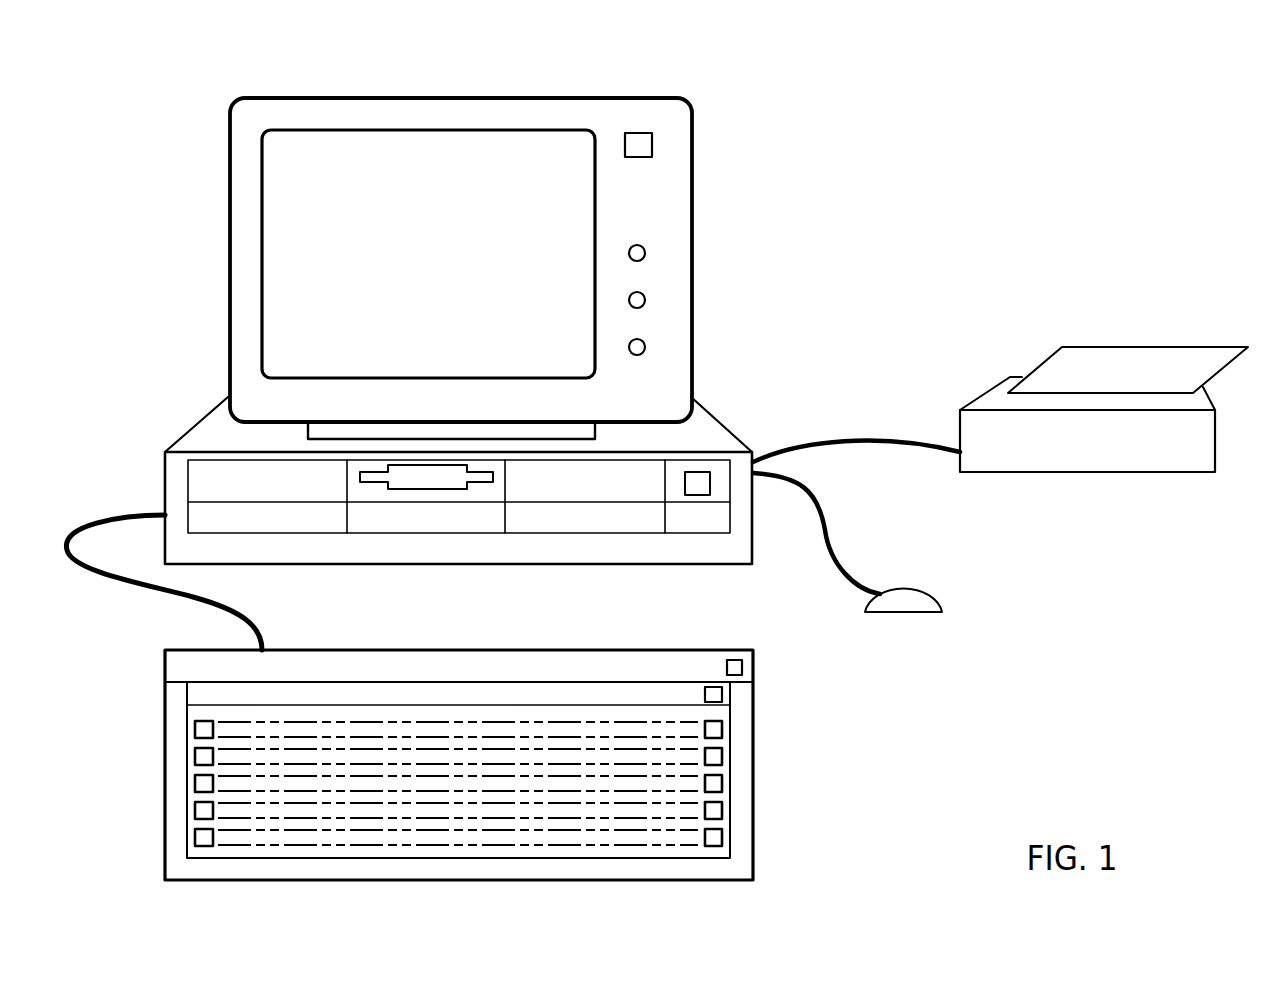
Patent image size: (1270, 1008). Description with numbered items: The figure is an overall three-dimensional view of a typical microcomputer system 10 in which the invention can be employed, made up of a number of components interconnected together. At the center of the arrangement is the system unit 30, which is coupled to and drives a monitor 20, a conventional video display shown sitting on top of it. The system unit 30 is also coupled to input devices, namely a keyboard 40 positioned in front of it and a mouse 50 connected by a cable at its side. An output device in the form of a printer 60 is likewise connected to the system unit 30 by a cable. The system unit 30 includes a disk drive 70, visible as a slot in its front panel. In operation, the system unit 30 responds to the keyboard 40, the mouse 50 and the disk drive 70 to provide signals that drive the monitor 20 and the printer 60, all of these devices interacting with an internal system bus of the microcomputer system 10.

The microcomputer system 10 is at (805, 147).
The monitor 20 is at (487, 101).
The system unit 30 is at (718, 417).
The keyboard 40 is at (753, 802).
The mouse 50 is at (905, 583).
The printer 60 is at (1067, 472).
The disk drive 70 is at (377, 487).